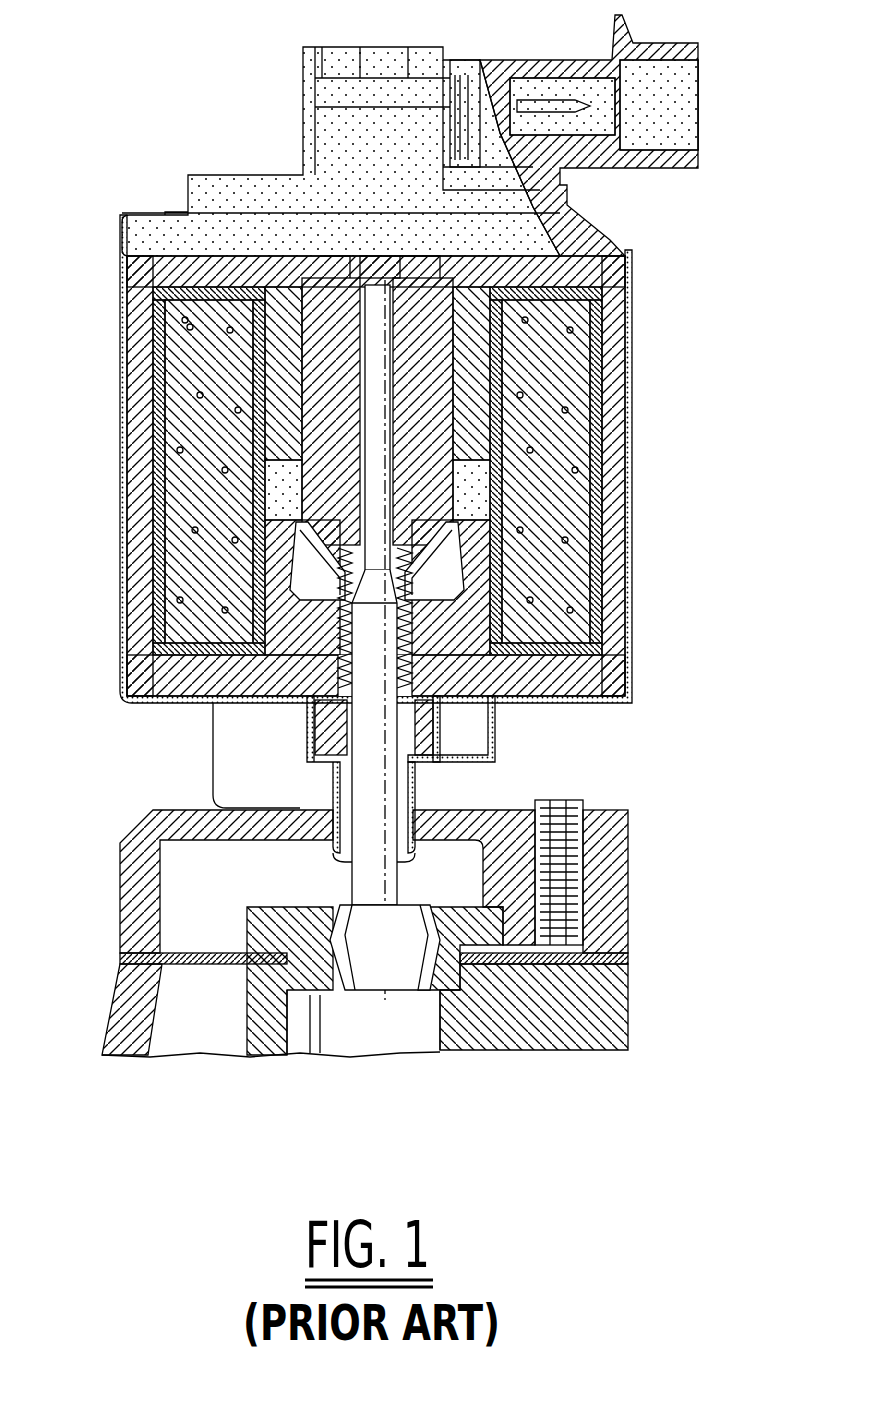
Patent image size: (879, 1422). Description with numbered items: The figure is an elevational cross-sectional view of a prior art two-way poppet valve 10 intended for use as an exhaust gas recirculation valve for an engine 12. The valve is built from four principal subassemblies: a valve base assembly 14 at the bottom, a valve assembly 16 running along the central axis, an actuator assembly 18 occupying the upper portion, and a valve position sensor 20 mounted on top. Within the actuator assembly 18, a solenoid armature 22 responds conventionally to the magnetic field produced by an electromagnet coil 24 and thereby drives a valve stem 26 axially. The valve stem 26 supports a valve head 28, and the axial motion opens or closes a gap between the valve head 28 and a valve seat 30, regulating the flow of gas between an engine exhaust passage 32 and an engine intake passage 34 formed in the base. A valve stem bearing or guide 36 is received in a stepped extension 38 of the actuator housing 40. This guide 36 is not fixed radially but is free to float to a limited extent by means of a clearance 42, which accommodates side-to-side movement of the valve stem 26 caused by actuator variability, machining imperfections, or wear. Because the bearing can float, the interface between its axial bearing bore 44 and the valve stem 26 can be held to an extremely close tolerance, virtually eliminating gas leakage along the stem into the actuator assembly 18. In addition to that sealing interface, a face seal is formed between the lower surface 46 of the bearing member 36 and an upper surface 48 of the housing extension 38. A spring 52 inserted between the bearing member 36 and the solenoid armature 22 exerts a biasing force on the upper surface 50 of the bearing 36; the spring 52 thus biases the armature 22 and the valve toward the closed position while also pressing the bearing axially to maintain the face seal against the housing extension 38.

The two-way poppet valve 10 is at (125, 210).
The engine 12 is at (612, 1003).
The valve base assembly 14 is at (120, 835).
The valve assembly 16 is at (380, 790).
The actuator assembly 18 is at (636, 612).
The valve position sensor 20 is at (300, 82).
The solenoid armature 22 is at (437, 443).
The electromagnet coil 24 is at (573, 368).
The valve stem 26 is at (408, 658).
The valve head 28 is at (363, 970).
The valve seat 30 is at (320, 923).
The engine exhaust passage 32 is at (390, 1047).
The engine intake passage 34 is at (197, 1038).
The valve stem bearing or guide 36 is at (303, 722).
The stepped extension 38 is at (445, 760).
The actuator housing 40 is at (630, 463).
The clearance 42 is at (457, 742).
The axial bearing bore 44 is at (352, 739).
The lower surface 46 is at (415, 765).
The upper surface 48 is at (307, 752).
The upper surface 50 is at (310, 700).
The spring 52 is at (345, 577).